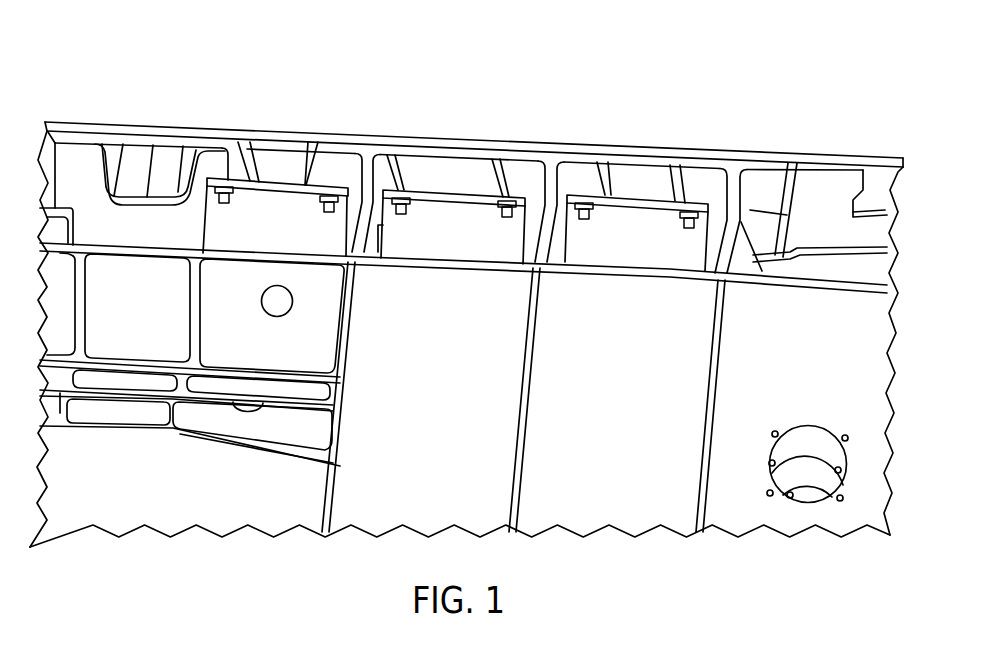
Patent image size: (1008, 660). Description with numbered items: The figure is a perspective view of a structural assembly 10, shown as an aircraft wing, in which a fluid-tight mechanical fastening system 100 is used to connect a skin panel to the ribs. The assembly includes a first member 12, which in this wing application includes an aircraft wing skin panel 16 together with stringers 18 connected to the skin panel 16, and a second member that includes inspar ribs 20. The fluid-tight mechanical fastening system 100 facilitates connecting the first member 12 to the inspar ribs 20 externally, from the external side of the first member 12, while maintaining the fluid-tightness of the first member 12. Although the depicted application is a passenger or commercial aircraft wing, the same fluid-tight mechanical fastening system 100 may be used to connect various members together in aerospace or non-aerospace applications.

The structural assembly 10 is at (466, 285).
The first member 12 is at (463, 136).
The aircraft wing skin panel 16 is at (641, 157).
The stringers 18 is at (228, 153).
The inspar ribs 20 is at (263, 240).
The fluid-tight mechanical fastening system 100 is at (223, 207).